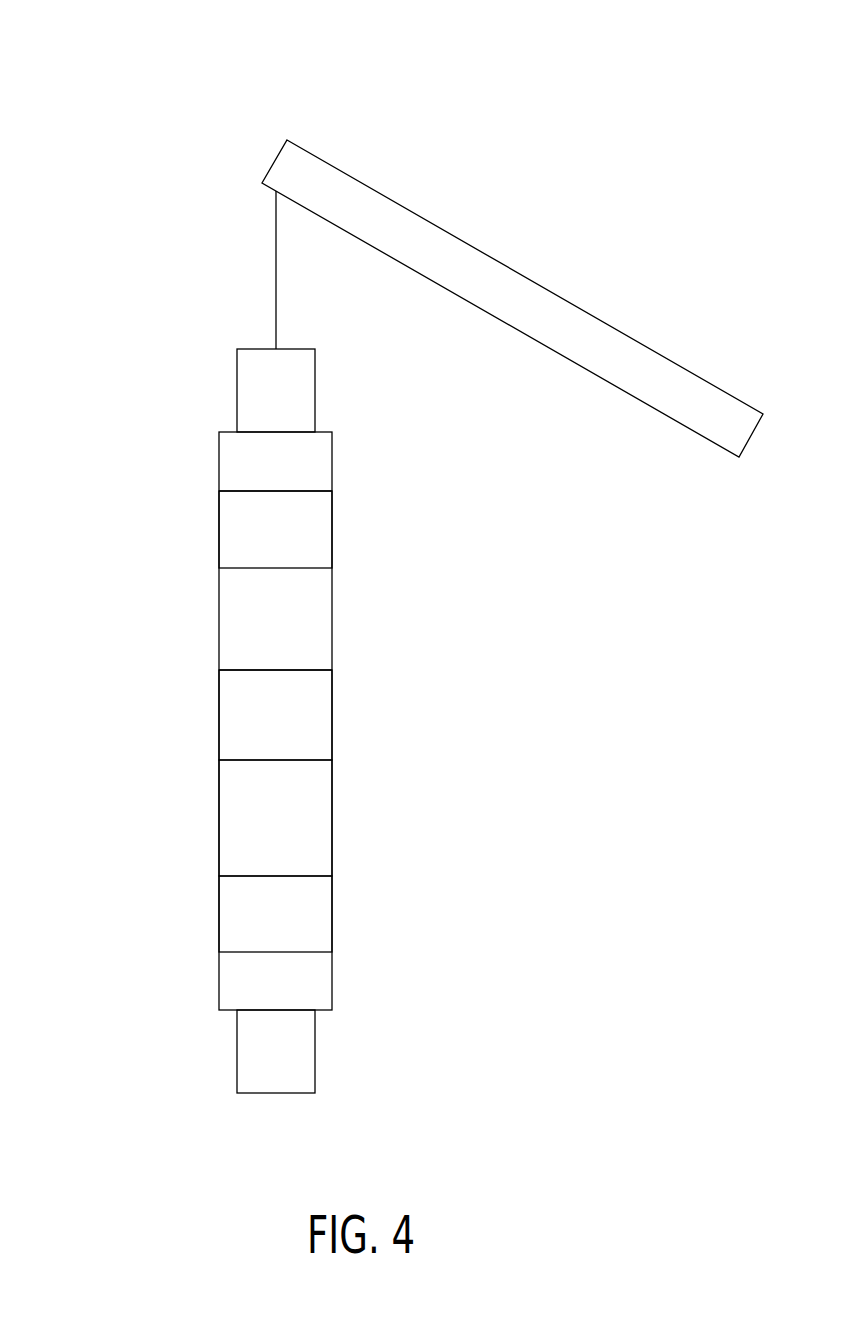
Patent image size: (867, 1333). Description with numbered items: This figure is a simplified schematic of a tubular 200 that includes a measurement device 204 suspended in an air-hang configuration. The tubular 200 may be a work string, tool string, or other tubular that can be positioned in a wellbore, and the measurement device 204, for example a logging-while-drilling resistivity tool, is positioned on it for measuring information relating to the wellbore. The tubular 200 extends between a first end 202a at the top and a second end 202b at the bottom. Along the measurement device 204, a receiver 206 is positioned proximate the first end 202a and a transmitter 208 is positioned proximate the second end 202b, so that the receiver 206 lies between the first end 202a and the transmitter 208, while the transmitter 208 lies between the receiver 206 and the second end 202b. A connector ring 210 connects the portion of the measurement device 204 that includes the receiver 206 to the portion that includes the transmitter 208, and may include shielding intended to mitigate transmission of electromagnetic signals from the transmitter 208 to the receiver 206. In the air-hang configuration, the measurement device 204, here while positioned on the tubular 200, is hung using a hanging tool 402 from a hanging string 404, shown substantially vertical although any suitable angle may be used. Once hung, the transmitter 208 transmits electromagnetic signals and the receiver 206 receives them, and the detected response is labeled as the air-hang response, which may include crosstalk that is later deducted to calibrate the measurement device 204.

The tubular 200 is at (112, 82).
The first end 202a is at (247, 388).
The second end 202b is at (250, 1058).
The measurement device 204 is at (238, 813).
The receiver 206 is at (238, 923).
The transmitter 208 is at (238, 525).
The connector ring 210 is at (238, 716).
The hanging tool 402 is at (505, 263).
The hanging string 404 is at (276, 265).